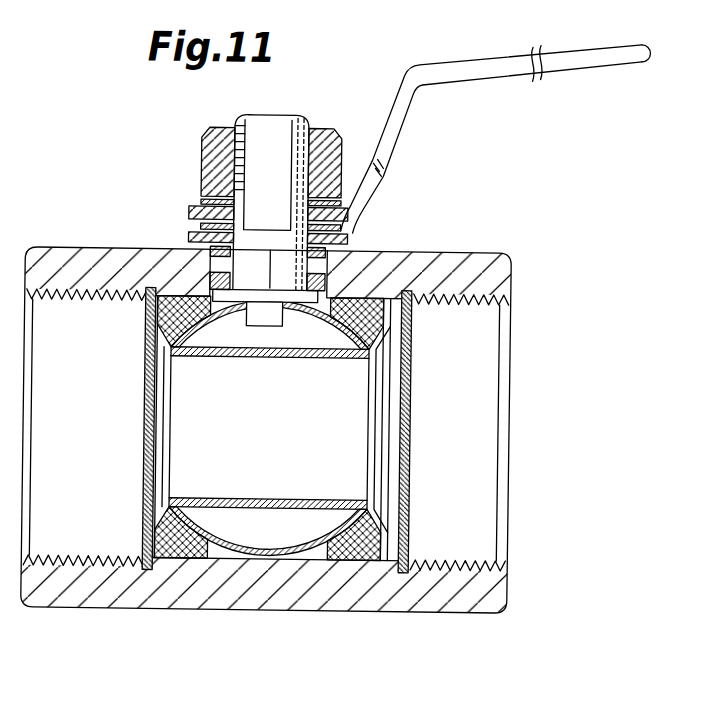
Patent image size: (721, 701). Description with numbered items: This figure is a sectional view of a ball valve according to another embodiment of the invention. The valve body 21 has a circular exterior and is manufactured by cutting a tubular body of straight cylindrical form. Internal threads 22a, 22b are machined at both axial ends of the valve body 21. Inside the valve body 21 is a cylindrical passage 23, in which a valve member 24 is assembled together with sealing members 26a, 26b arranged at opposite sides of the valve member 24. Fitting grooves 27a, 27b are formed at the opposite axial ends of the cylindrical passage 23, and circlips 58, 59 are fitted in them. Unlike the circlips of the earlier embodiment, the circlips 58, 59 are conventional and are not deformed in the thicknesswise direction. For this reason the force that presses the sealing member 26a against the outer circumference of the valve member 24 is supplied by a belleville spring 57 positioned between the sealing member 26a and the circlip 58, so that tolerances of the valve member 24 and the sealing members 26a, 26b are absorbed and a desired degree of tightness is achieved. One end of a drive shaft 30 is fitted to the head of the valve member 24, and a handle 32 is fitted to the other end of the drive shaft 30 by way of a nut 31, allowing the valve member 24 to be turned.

The valve body 21 is at (72, 264).
The internal thread 22a is at (469, 299).
The internal thread 22b is at (111, 292).
The cylindrical passage 23 is at (286, 560).
The valve member 24 is at (246, 550).
The sealing member 26a is at (367, 297).
The sealing member 26b is at (170, 296).
The fitting groove 27a is at (405, 572).
The fitting groove 27b is at (148, 574).
The drive shaft 30 is at (271, 126).
The nut 31 is at (212, 137).
The handle 32 is at (489, 66).
The belleville spring 57 is at (390, 312).
The circlip 58 is at (405, 450).
The circlip 59 is at (147, 445).